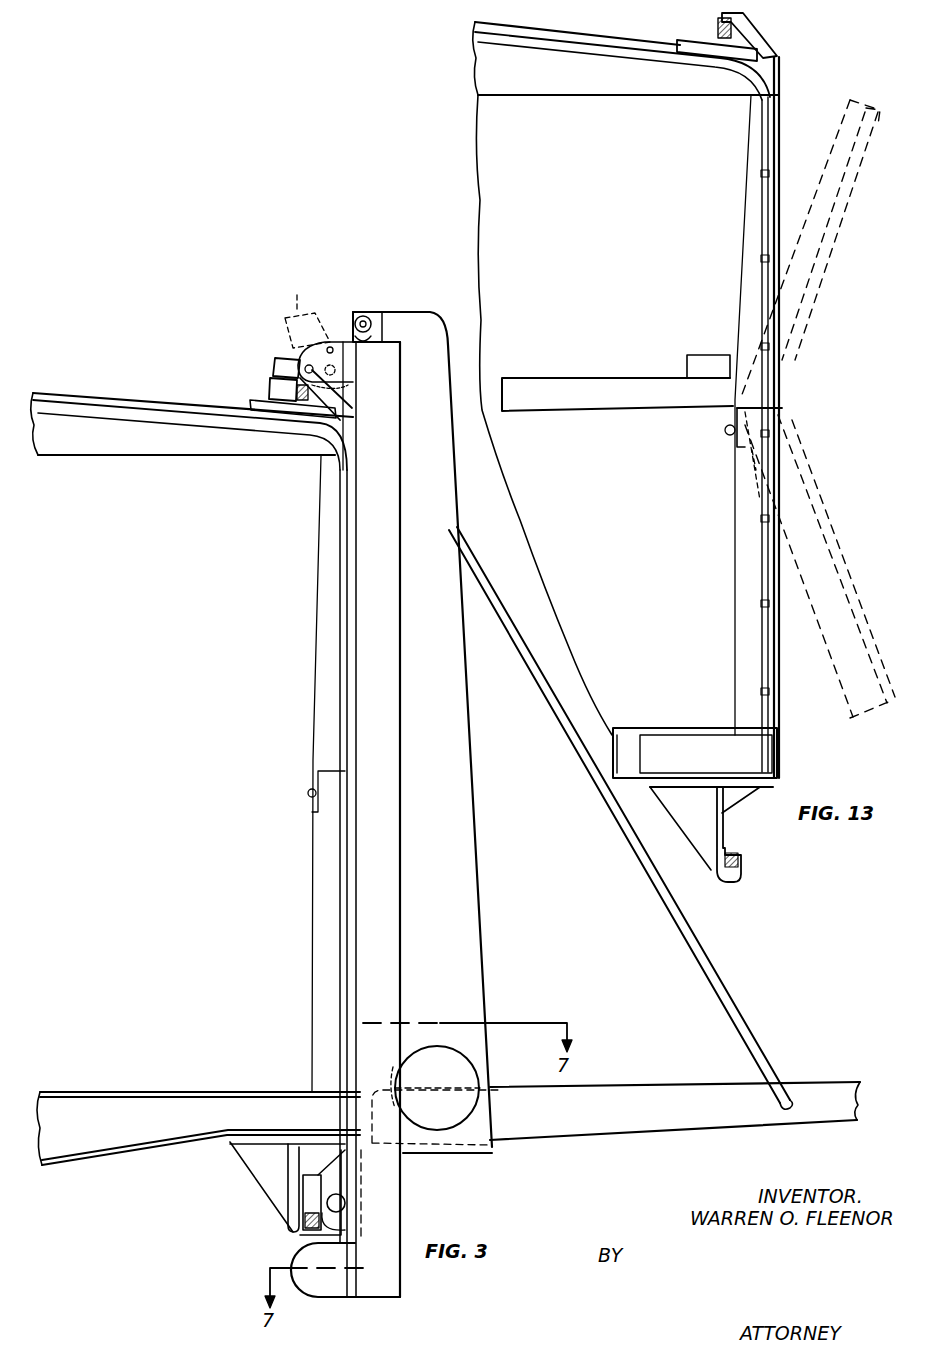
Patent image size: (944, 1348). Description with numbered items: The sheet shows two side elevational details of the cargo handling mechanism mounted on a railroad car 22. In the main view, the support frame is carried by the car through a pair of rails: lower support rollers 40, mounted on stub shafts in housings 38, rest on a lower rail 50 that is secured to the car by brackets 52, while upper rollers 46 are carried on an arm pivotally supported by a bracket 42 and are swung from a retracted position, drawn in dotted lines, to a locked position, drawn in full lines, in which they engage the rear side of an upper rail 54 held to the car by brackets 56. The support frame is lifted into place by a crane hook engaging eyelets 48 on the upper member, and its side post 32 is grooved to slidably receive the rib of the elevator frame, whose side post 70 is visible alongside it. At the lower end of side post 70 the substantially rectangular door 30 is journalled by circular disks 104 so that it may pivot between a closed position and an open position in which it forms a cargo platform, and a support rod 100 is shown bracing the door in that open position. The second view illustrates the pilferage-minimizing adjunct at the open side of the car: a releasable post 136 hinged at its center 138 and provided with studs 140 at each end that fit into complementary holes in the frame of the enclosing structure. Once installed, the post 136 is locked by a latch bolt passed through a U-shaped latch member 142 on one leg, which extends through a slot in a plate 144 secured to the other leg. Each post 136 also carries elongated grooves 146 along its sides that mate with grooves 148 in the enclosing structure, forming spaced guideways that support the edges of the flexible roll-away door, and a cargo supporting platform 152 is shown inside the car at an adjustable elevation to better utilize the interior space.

In FIG. 3, the railroad car 22 is at (116, 398).
In FIG. 13, the railroad car 22 is at (607, 40).
In FIG. 3, the grooves 148 is at (177, 414).
In FIG. 13, the grooves 148 is at (612, 53).
In FIG. 3, the rollers 46 is at (277, 388).
In FIG. 3, the brackets 42 is at (340, 342).
In FIG. 3, the eyelets 48 is at (368, 322).
In FIG. 3, the brackets 56 is at (330, 398).
In FIG. 13, the brackets 56 is at (752, 34).
In FIG. 3, the upper rail 54 is at (310, 393).
In FIG. 13, the upper rail 54 is at (718, 27).
In FIG. 3, the elongated grooves 146 is at (342, 612).
In FIG. 13, the elongated grooves 146 is at (762, 652).
In FIG. 3, the U-shaped latch member 142 is at (315, 795).
In FIG. 13, the U-shaped latch member 142 is at (727, 432).
In FIG. 3, the posts 136 is at (322, 836).
In FIG. 13, the posts 136 is at (738, 485).
In FIG. 3, the side posts 32 is at (366, 913).
In FIG. 3, the side posts 70 is at (462, 900).
In FIG. 3, the circular disks 104 is at (460, 1072).
In FIG. 3, the housings 38 is at (338, 1178).
In FIG. 3, the door 30 is at (583, 1128).
In FIG. 3, the brackets 52 is at (253, 1160).
In FIG. 13, the brackets 52 is at (724, 830).
In FIG. 3, the support rollers 40 is at (300, 1196).
In FIG. 3, the lower rail 50 is at (307, 1228).
In FIG. 13, the lower rail 50 is at (740, 858).
In FIG. 3, the support rods 100 is at (680, 930).
In FIG. 13, the studs 140 is at (777, 73).
In FIG. 13, the cargo supporting platforms 152 is at (583, 384).
In FIG. 13, the hinge 138 is at (776, 411).
In FIG. 13, the plate 144 is at (737, 447).